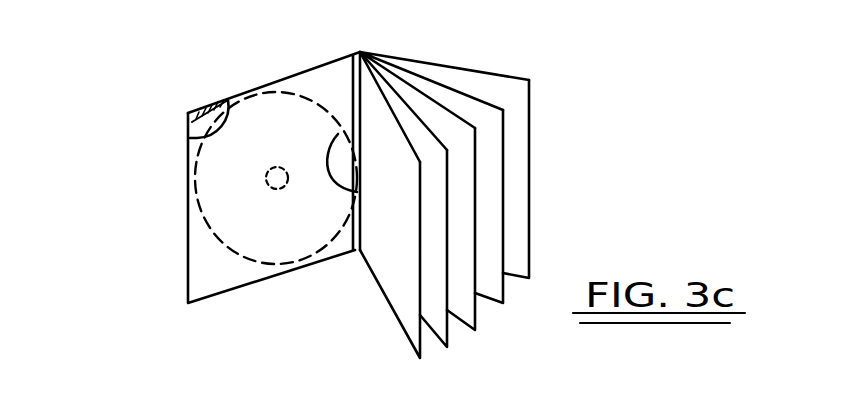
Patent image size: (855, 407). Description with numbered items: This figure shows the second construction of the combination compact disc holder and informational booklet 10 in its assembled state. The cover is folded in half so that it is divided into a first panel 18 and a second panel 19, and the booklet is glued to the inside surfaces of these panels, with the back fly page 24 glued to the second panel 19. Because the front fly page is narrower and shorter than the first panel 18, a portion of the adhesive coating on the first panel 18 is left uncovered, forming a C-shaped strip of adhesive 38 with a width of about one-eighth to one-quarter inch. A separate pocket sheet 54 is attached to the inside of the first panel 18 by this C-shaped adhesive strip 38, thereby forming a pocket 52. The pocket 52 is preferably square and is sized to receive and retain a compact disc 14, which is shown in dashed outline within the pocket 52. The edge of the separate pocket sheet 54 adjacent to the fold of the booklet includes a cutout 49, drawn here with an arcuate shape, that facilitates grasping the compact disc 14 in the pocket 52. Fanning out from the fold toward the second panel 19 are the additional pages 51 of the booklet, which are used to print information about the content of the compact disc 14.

The combination compact disc holder and informational booklet 10 is at (612, 157).
The compact disc 14 is at (338, 134).
The first panel 18 is at (187, 234).
The second panel 19 is at (586, 165).
The back fly page 24 is at (520, 118).
The C-shaped strip of adhesive 38 is at (189, 112).
The cutout 49 is at (347, 190).
The additional pages 51 is at (408, 367).
The pocket 52 is at (355, 137).
The separate pocket sheet 54 is at (187, 132).